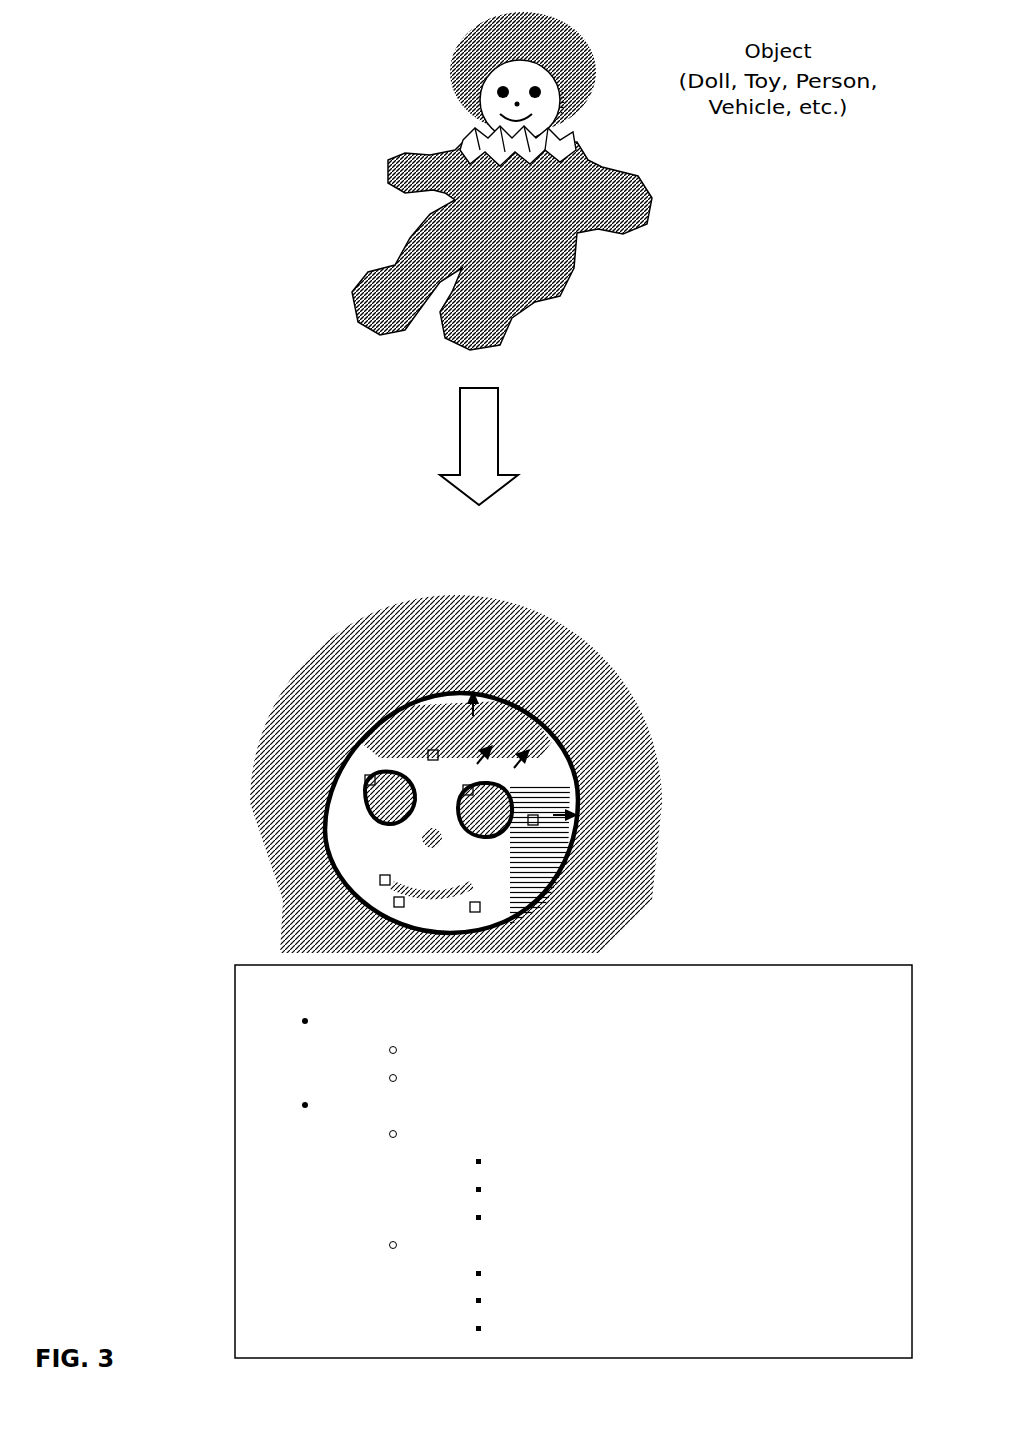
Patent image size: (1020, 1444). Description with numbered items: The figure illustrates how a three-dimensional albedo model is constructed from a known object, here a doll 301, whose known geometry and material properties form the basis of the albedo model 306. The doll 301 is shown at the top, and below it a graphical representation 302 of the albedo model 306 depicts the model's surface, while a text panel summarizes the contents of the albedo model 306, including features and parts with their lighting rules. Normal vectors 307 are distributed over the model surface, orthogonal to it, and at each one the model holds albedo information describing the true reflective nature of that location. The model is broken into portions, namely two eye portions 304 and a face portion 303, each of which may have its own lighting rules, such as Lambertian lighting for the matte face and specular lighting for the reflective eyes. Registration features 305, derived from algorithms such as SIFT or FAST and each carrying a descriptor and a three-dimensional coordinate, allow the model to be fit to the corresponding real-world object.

The doll 301 is at (610, 263).
The graphical representation 302 is at (610, 868).
The face portion 303 is at (325, 870).
The eye portions 304 is at (513, 802).
The registration features 305 is at (427, 753).
The albedo model 306 is at (829, 1023).
The normal vectors 307 is at (480, 752).